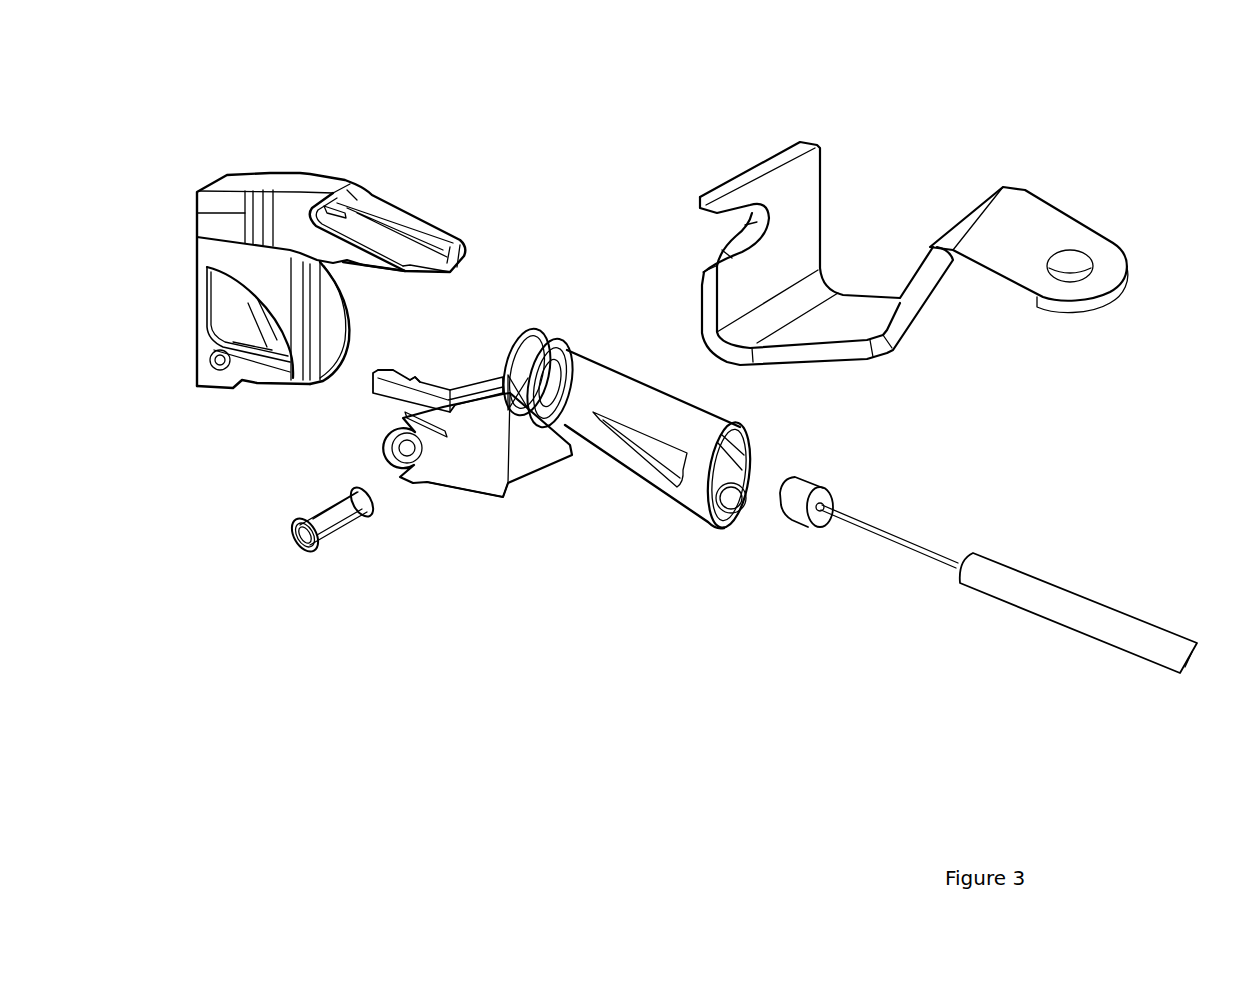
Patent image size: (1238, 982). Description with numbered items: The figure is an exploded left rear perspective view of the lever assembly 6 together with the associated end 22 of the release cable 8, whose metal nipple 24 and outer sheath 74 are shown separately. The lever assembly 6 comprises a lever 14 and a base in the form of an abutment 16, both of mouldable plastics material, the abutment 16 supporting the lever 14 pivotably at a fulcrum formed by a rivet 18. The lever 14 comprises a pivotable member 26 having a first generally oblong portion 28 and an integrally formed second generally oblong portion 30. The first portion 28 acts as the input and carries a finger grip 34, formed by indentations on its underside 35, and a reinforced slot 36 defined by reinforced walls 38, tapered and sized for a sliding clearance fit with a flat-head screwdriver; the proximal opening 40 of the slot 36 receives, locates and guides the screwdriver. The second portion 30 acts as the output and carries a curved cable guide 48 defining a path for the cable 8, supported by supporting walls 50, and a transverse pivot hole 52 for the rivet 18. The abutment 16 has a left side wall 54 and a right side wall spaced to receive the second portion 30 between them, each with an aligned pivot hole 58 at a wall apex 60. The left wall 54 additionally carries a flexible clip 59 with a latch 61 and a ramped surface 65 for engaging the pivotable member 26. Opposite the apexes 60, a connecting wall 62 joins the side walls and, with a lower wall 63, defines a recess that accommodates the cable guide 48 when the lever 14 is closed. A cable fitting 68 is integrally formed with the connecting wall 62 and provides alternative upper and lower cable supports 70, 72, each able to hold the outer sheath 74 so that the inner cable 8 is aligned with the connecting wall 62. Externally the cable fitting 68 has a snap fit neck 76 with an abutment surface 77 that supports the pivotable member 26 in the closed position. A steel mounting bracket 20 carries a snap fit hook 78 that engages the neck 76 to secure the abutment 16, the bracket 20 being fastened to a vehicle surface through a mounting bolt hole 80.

The lever assembly 6 is at (522, 687).
The cable 8 is at (917, 547).
The lever 14 is at (453, 207).
The abutment 16 is at (608, 503).
The rivet 18 is at (307, 563).
The mounting bracket 20 is at (878, 207).
The end of the cable 22 is at (858, 577).
The nipple 24 is at (797, 490).
The pivotable member 26 is at (230, 253).
The first generally oblong portion 28 is at (305, 165).
The second generally oblong portion 30 is at (172, 355).
The finger grip 34 is at (465, 267).
The underside 35 is at (452, 285).
The reinforced slot 36 is at (337, 210).
The reinforced walls 38 is at (317, 178).
The proximal opening 40 is at (340, 201).
The cable guide 48 is at (342, 297).
The supporting walls 50 is at (292, 338).
The transverse pivot hole 52 is at (218, 362).
The left side wall 54 is at (462, 458).
The pivot hole 58 is at (407, 458).
The flexible clip 59 is at (367, 395).
The wall apex 60 is at (363, 455).
The latch 61 is at (418, 367).
The connecting wall 62 is at (540, 453).
The lower wall 63 is at (507, 497).
The ramped surface 65 is at (393, 360).
The cable fitting 68 is at (617, 350).
The upper cable support 70 is at (735, 452).
The lower cable support 72 is at (722, 513).
The outer sheath 74 is at (1020, 585).
The snap fit neck 76 is at (578, 322).
The abutment surface 77 is at (502, 337).
The snap fit hook 78 is at (690, 222).
The mounting bolt hole 80 is at (1073, 260).